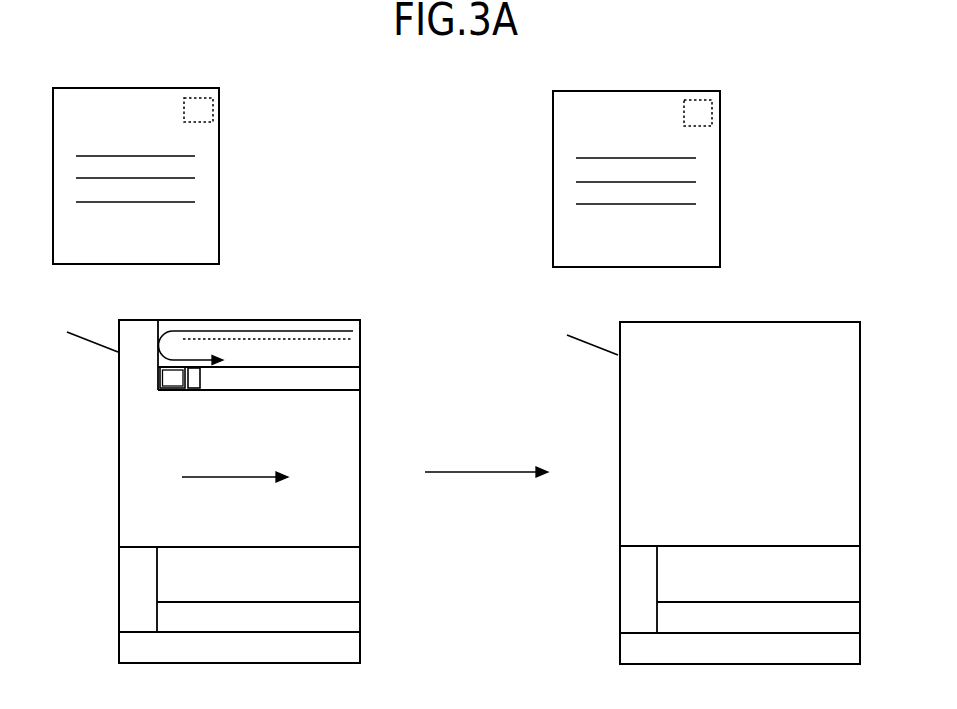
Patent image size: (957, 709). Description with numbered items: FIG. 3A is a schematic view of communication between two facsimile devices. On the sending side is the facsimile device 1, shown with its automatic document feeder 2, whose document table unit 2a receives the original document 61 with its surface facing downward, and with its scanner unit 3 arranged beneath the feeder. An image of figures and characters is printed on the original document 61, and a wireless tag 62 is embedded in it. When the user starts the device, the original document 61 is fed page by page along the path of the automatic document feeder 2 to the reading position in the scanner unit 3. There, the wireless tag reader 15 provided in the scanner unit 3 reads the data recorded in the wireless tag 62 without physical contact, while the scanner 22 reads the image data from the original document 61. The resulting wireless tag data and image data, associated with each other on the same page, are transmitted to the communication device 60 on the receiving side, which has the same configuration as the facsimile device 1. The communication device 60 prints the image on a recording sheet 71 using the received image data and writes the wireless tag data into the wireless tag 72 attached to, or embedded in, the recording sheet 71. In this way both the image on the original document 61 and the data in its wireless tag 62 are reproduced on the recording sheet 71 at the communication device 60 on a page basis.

The facsimile device 1 is at (326, 278).
The automatic document feeder 2 is at (358, 351).
The document table unit 2a is at (235, 337).
The scanner unit 3 is at (358, 379).
The wireless tag reader 15 is at (167, 379).
The scanner 22 is at (192, 390).
The communication device 60 is at (798, 281).
The original document 61 is at (140, 92).
The wireless tag 62 is at (215, 111).
The recording sheet 71 is at (642, 93).
The wireless tag 72 is at (714, 114).